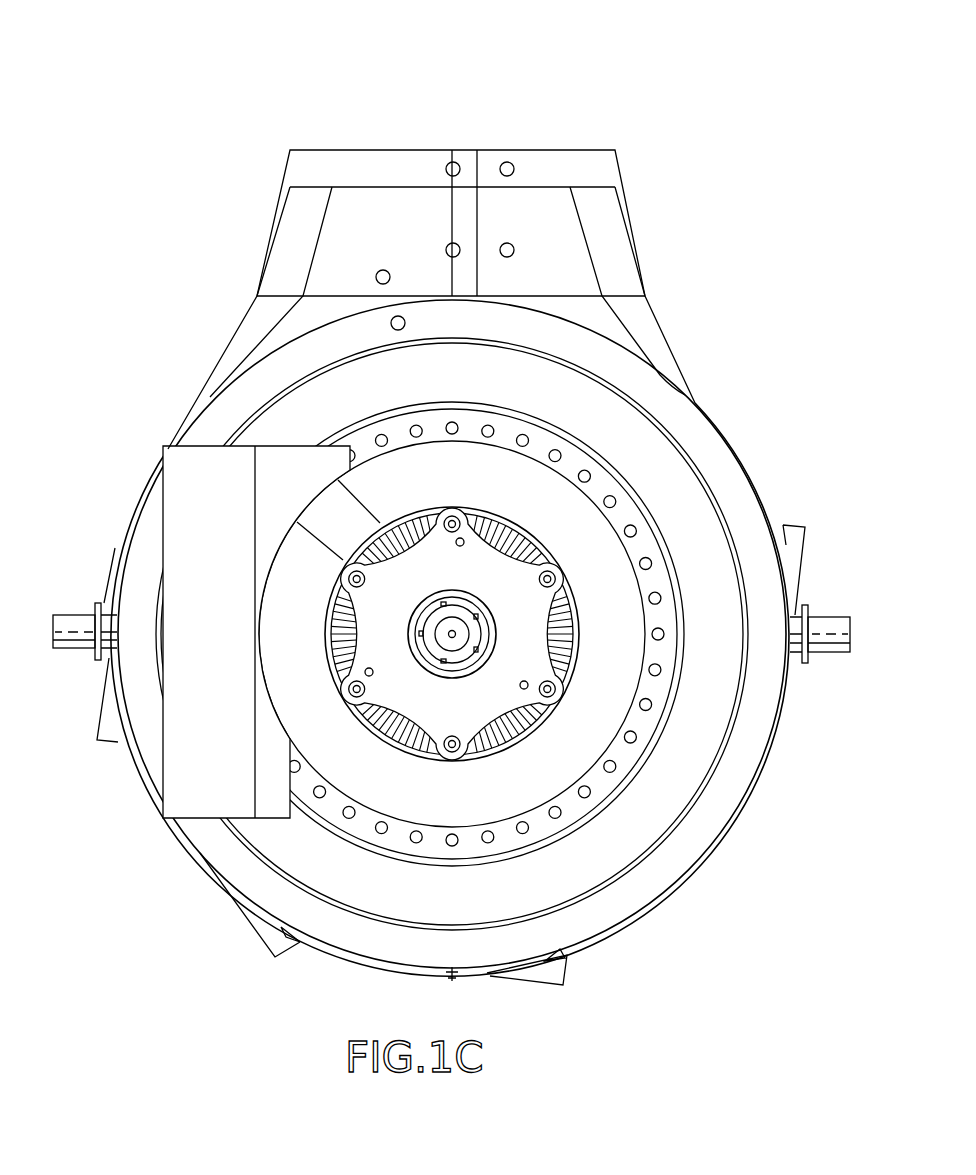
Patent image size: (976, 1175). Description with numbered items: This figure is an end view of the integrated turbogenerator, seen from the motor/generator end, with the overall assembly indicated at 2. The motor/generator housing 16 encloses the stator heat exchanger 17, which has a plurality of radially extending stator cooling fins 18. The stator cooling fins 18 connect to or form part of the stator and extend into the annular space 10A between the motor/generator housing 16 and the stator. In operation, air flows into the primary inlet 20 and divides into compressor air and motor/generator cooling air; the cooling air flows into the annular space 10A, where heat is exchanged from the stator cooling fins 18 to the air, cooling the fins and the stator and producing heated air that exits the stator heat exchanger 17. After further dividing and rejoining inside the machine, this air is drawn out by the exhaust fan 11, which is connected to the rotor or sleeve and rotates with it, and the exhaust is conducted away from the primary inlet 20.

The motor assembly 2 is at (585, 143).
The annular space 10A is at (573, 638).
The exhaust fan 11 is at (430, 652).
The motor/generator housing 16 is at (532, 733).
The stator heat exchanger 17 is at (573, 597).
The stator cooling fins 18 is at (517, 533).
The primary inlet 20 is at (449, 479).